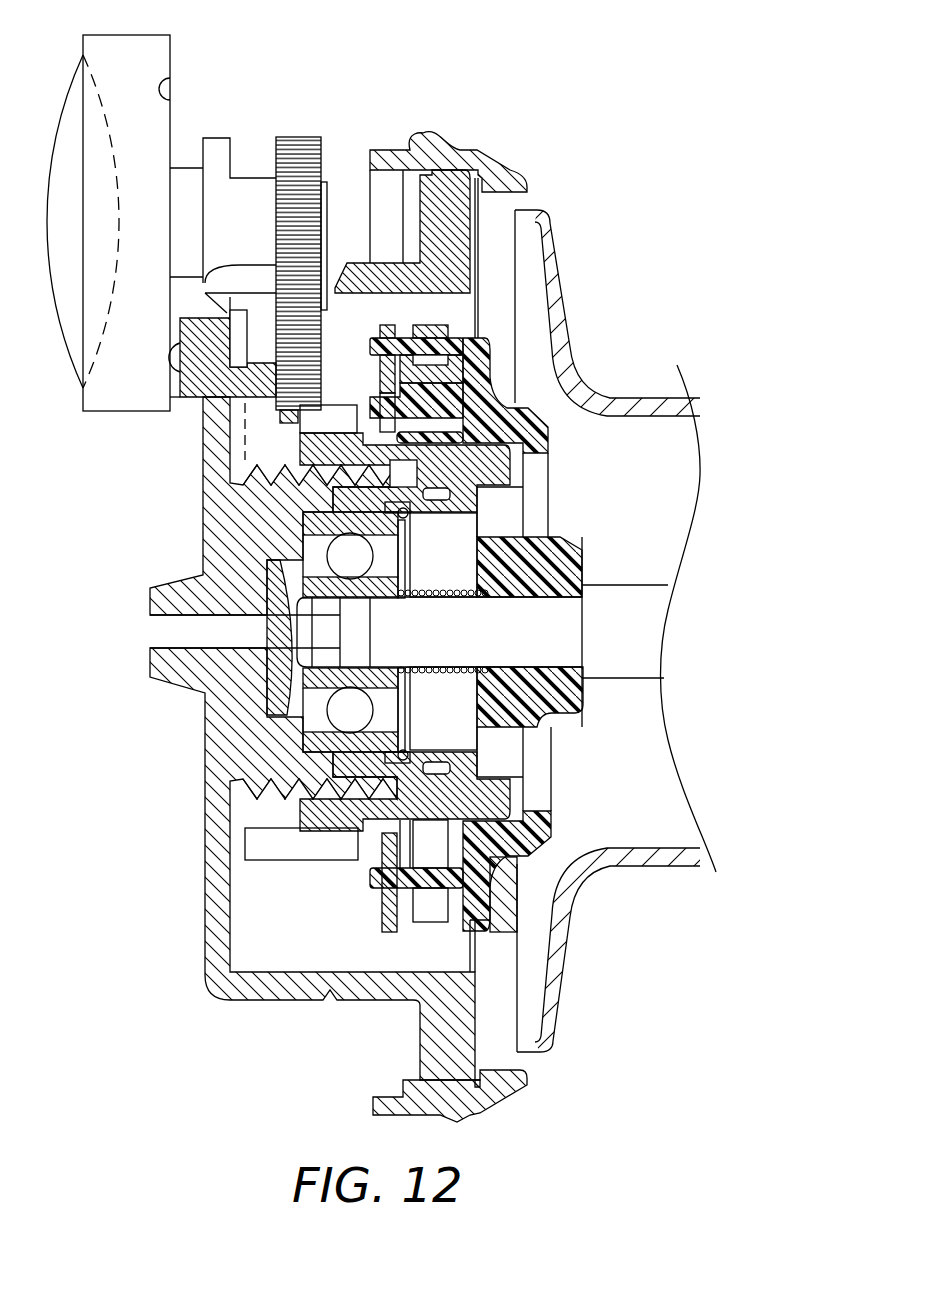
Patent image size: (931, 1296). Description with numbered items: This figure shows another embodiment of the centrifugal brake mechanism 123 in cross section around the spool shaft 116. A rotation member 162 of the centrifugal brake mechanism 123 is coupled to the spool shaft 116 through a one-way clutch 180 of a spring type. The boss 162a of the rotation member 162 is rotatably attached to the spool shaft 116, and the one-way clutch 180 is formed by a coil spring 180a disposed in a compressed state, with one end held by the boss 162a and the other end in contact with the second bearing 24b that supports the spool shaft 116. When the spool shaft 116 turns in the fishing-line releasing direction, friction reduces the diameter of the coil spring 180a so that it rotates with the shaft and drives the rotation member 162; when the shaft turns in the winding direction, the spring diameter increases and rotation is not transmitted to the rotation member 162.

The second bearing 24b is at (308, 522).
The centrifugal brake mechanism 123 is at (493, 310).
The rotation member 162 is at (530, 397).
The boss 162a is at (550, 555).
The spool shaft 116 is at (628, 612).
The coil spring 180a is at (457, 688).
The one-way clutch 180 is at (440, 817).